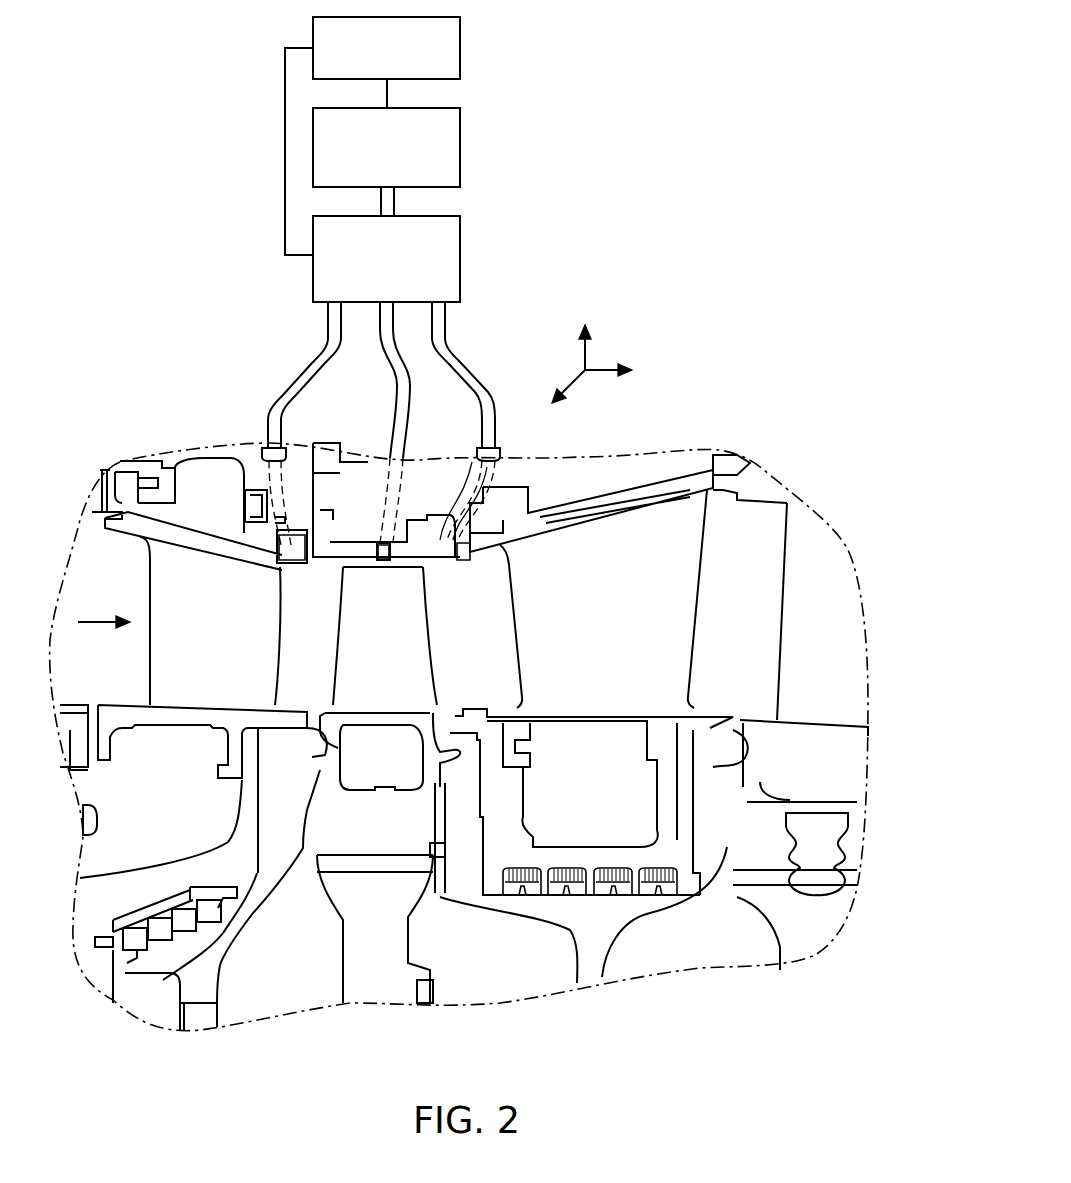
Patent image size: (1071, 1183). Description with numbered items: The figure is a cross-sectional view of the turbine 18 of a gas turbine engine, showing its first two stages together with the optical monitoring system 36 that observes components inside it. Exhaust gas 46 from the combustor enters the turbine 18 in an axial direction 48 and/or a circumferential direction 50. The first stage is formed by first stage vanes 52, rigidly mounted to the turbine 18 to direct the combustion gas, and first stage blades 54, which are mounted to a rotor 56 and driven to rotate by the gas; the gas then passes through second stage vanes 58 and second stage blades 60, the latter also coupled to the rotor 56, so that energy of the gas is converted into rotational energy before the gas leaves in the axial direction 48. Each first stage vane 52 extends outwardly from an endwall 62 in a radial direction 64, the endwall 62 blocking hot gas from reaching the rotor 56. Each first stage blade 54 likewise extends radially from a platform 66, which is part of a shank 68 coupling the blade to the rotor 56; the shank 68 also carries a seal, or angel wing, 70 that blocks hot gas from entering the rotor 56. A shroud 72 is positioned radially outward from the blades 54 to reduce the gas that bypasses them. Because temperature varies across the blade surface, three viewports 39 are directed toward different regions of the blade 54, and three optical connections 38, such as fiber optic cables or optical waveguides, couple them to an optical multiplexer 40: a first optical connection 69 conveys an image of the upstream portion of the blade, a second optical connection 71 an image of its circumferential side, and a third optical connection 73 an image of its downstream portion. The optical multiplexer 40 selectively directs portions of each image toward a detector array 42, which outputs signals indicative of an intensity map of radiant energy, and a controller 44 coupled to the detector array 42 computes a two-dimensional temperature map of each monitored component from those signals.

The turbine 18 is at (575, 473).
The optical monitoring system 36 is at (574, 141).
The optical connections 38 is at (291, 332).
The viewports 39 is at (283, 548).
The optical multiplexer 40 is at (462, 256).
The detector array 42 is at (462, 148).
The controller 44 is at (462, 49).
The exhaust gas 46 is at (107, 622).
The axial direction 48 is at (600, 368).
The circumferential direction 50 is at (573, 384).
The first stage vanes 52 is at (222, 618).
The first stage blades 54 is at (400, 640).
The rotor 56 is at (372, 843).
The second stage vanes 58 is at (616, 613).
The second stage blades 60 is at (835, 618).
The endwall 62 is at (287, 718).
The radial direction 64 is at (583, 360).
The platform 66 is at (378, 718).
The shank 68 is at (328, 755).
The first optical connection 69 is at (285, 387).
The seal (angel wing) 70 is at (442, 750).
The second optical connection 71 is at (410, 448).
The shroud 72 is at (347, 547).
The third optical connection 73 is at (494, 436).